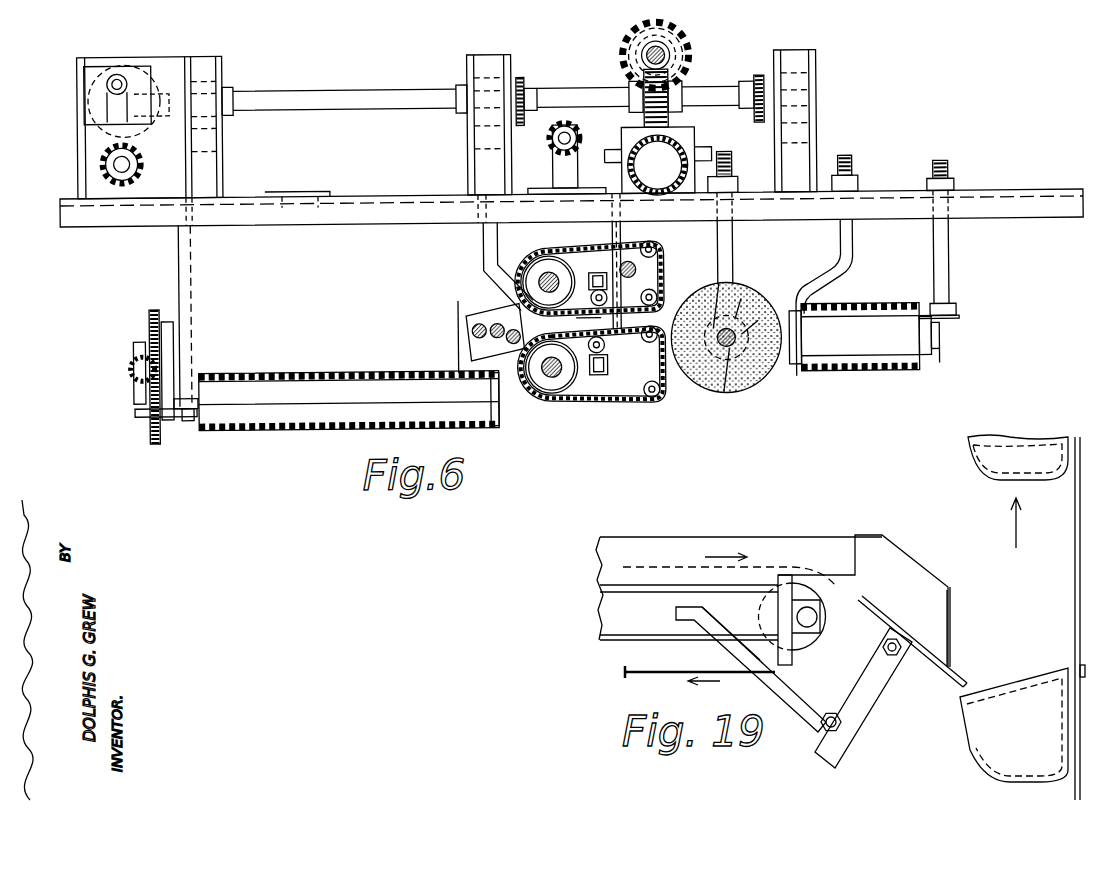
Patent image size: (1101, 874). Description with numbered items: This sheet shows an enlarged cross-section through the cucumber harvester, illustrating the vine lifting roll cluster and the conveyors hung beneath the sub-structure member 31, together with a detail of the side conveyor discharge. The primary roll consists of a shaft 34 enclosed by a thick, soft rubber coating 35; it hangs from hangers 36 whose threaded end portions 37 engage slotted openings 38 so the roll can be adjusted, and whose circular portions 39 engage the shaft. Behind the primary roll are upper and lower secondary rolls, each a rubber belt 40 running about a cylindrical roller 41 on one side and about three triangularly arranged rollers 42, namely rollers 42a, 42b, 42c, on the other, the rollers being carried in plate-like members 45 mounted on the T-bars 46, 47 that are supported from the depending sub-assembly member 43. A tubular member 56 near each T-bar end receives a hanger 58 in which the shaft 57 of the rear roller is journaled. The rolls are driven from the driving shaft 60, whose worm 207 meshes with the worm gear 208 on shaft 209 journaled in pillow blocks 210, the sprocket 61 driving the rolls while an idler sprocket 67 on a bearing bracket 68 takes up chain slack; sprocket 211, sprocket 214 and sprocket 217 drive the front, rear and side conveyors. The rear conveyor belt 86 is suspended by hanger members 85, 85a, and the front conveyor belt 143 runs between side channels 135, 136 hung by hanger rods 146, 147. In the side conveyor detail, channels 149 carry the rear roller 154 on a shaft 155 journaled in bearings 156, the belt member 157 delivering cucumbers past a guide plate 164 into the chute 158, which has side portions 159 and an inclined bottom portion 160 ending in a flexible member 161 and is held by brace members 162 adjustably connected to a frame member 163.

In FIG. 6, the sub-structure member 31 is at (403, 196).
In FIG. 6, the shaft 34 is at (725, 392).
In FIG. 6, the rubber coating 35 is at (742, 300).
In FIG. 6, the hanger 36 is at (732, 262).
In FIG. 6, the threaded end portion 37 is at (733, 231).
In FIG. 6, the slotted opening 38 is at (736, 190).
In FIG. 6, the circular portion 39 is at (770, 294).
In FIG. 6, the belt 40 is at (558, 400).
In FIG. 6, the cylindrical roller 41 is at (535, 265).
In FIG. 6, the roller 42 is at (562, 248).
In FIG. 6, the roller 42a is at (585, 315).
In FIG. 6, the roller 42b is at (665, 295).
In FIG. 6, the roller 42c is at (652, 250).
In FIG. 6, the sub-assembly member 43 is at (620, 232).
In FIG. 6, the plate-like member 45 is at (625, 262).
In FIG. 6, the T-bar 46 is at (664, 270).
In FIG. 6, the T-bar 47 is at (660, 388).
In FIG. 6, the tubular member 56 is at (622, 395).
In FIG. 6, the shaft 57 is at (540, 285).
In FIG. 6, the hanger 58 is at (592, 390).
In FIG. 6, the driving shaft 60 is at (668, 60).
In FIG. 6, the chain sprocket 61 is at (624, 48).
In FIG. 6, the idler sprocket 67 is at (578, 136).
In FIG. 6, the bearing bracket 68 is at (556, 170).
In FIG. 6, the hanger member 85 is at (193, 266).
In FIG. 6, the hanger member 85a is at (485, 250).
In FIG. 6, the conveyor belt 86 is at (322, 370).
In FIG. 6, the side channel 135 is at (926, 352).
In FIG. 6, the side channel 136 is at (792, 376).
In FIG. 6, the endless conveyor belt 143 is at (860, 306).
In FIG. 6, the hanger rod 146 is at (853, 244).
In FIG. 6, the hanger rod 147 is at (950, 279).
In FIG. 6, the worm 207 is at (688, 44).
In FIG. 6, the worm gear 208 is at (672, 122).
In FIG. 6, the shaft 209 is at (398, 100).
In FIG. 6, the pillow block 210 is at (225, 160).
In FIG. 6, the sprocket 211 is at (742, 90).
In FIG. 6, the sprocket 214 is at (526, 88).
In FIG. 6, the sprocket 217 is at (160, 132).
In FIG. 19, the channel 149 is at (640, 630).
In FIG. 19, the roller 154 is at (740, 652).
In FIG. 19, the shaft 155 is at (807, 607).
In FIG. 19, the bearing 156 is at (798, 655).
In FIG. 19, the belt member 157 is at (640, 675).
In FIG. 19, the chute 158 is at (905, 555).
In FIG. 19, the side portion 159 is at (950, 632).
In FIG. 19, the inclined bottom portion 160 is at (907, 664).
In FIG. 19, the flexible member 161 is at (950, 676).
In FIG. 19, the brace member 162 is at (790, 696).
In FIG. 19, the frame member 163 is at (862, 708).
In FIG. 19, the guide plate 164 is at (758, 540).